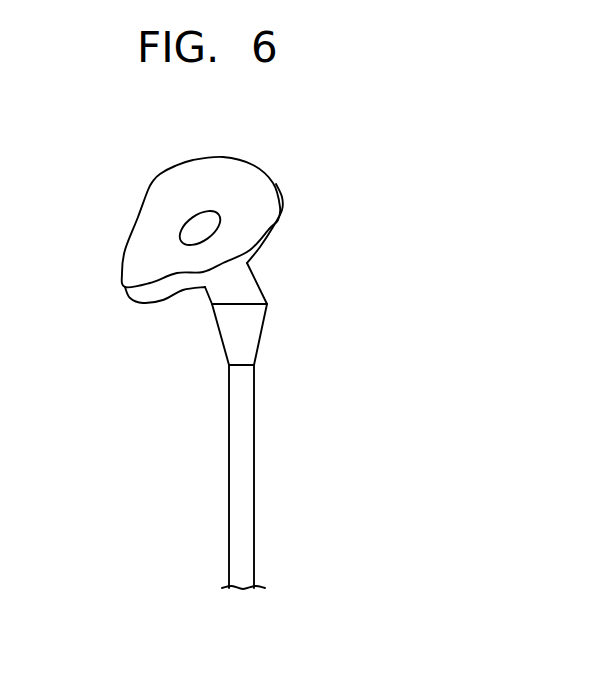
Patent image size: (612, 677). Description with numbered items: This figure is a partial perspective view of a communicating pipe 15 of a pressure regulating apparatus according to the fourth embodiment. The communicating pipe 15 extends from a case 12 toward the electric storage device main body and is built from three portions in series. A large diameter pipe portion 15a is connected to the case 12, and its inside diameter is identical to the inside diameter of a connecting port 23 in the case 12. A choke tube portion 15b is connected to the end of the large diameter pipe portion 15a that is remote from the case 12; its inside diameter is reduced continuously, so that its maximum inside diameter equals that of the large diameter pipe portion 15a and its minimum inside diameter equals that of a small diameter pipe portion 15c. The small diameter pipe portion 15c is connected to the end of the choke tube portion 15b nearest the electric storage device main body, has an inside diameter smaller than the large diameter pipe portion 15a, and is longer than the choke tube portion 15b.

The case 12 is at (148, 198).
The connecting port 23 is at (207, 212).
The communicating pipe 15 is at (291, 421).
The large diameter pipe portion 15a is at (243, 287).
The choke tube portion 15b is at (245, 330).
The small diameter pipe portion 15c is at (240, 473).